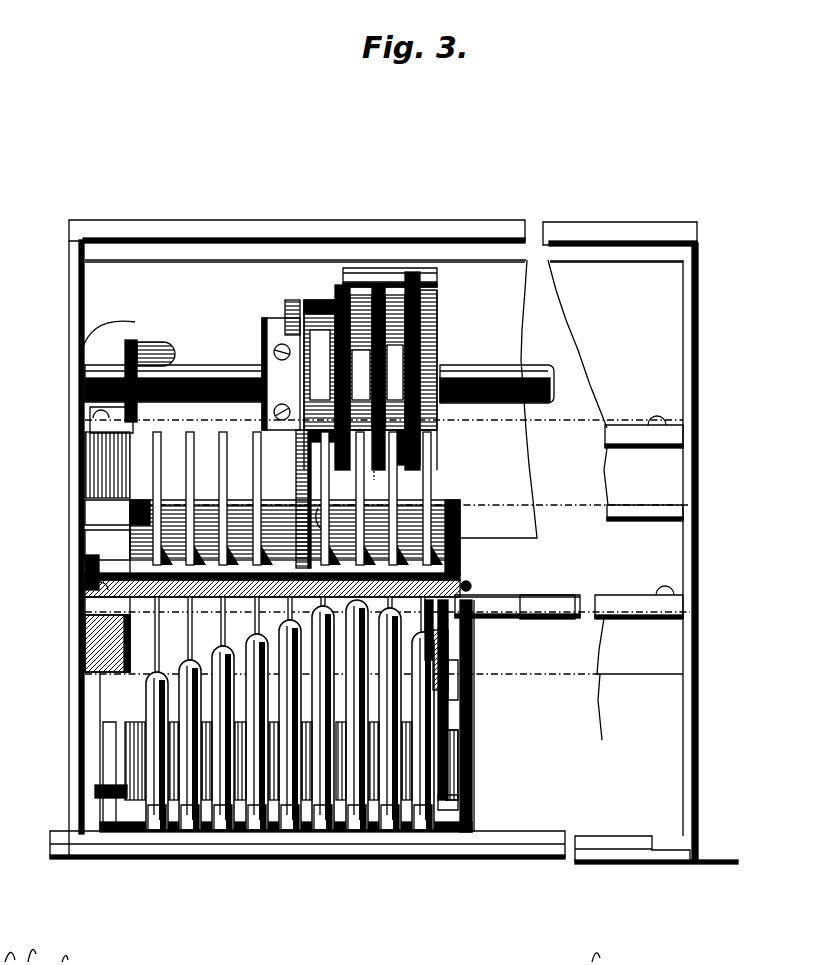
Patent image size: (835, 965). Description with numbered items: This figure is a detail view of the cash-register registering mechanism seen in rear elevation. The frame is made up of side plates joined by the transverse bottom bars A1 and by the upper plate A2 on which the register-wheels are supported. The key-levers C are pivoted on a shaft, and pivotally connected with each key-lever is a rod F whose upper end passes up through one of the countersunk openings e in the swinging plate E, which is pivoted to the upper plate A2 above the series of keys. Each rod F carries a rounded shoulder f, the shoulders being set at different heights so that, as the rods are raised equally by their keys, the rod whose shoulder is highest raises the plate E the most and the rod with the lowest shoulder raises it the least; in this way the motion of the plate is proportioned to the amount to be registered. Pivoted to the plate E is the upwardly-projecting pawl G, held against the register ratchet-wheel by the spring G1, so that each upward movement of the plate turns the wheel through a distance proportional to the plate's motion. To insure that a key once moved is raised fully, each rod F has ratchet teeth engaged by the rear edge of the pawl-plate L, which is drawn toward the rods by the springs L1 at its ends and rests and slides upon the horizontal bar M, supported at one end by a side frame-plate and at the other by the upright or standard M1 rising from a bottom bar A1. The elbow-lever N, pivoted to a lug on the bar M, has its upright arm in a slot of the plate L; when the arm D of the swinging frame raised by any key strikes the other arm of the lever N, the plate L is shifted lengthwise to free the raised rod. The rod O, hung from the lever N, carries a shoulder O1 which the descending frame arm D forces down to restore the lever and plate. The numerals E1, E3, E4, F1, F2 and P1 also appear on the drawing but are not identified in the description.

The transverse bottom bar A1 is at (80, 586).
The upper plate A2 is at (384, 288).
The swinging plate E is at (296, 372).
The drum E1 is at (326, 312).
The shaft E3 is at (495, 374).
The shaft E4 is at (228, 362).
The pawl G is at (296, 470).
The spring G1 is at (333, 512).
The block F2 is at (376, 461).
The openings e is at (432, 566).
The pawl-plate L is at (470, 568).
The springs L1 is at (470, 584).
The panel P1 is at (107, 634).
The horizontal bar M is at (290, 634).
The upright or standard M1 is at (474, 720).
The shoulder f is at (234, 646).
The rod F is at (148, 700).
The rod F1 is at (111, 776).
The elbow-lever N is at (474, 638).
The arm of swinging frame D is at (472, 760).
The rod O is at (460, 688).
The shoulder O1 is at (460, 800).
The key-levers C is at (160, 830).